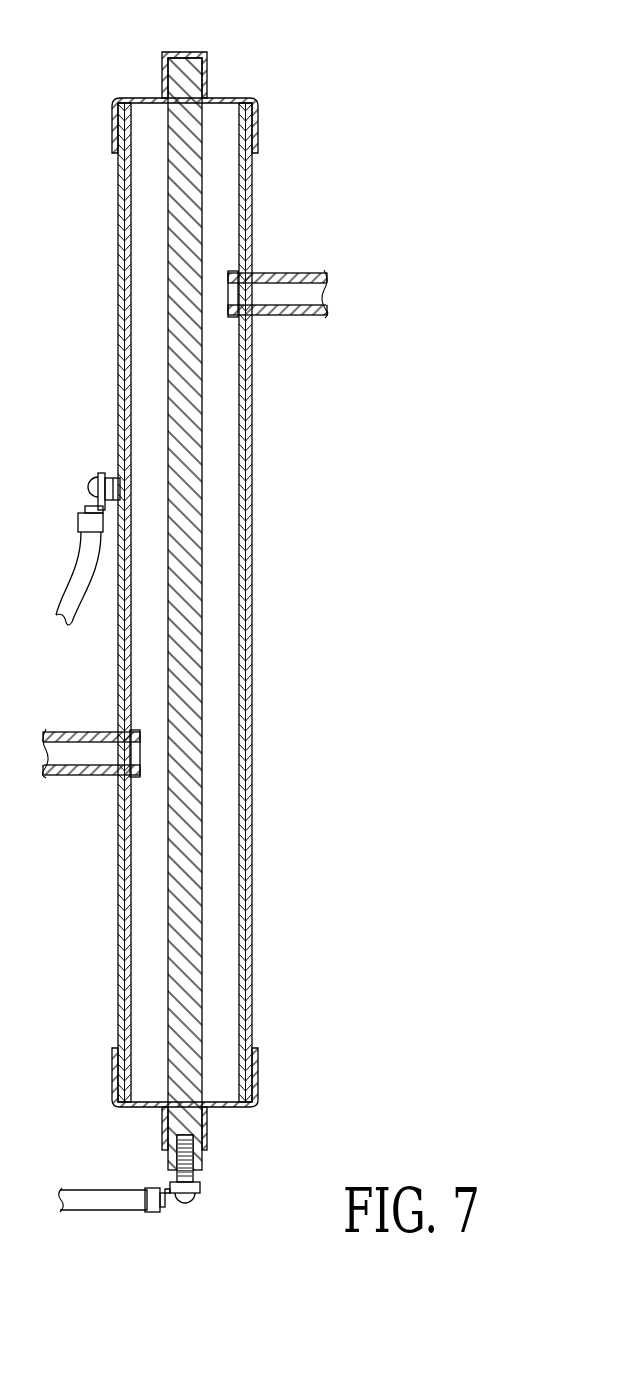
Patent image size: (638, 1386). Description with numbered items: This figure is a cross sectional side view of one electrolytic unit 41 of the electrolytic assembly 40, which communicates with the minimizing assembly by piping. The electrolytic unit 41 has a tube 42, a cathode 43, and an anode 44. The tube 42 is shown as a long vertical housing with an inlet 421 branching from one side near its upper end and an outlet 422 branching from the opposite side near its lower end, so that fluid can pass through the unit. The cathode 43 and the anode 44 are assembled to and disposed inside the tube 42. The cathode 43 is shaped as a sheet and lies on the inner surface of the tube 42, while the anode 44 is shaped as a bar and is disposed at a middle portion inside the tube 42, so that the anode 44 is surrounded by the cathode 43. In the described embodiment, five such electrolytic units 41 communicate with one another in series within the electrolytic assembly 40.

The electrolytic assembly 40 is at (192, 606).
The electrolytic unit 41 is at (263, 1001).
The tube 42 is at (250, 873).
The inlet 421 is at (258, 302).
The outlet 422 is at (114, 758).
The cathode 43 is at (127, 408).
The anode 44 is at (185, 578).